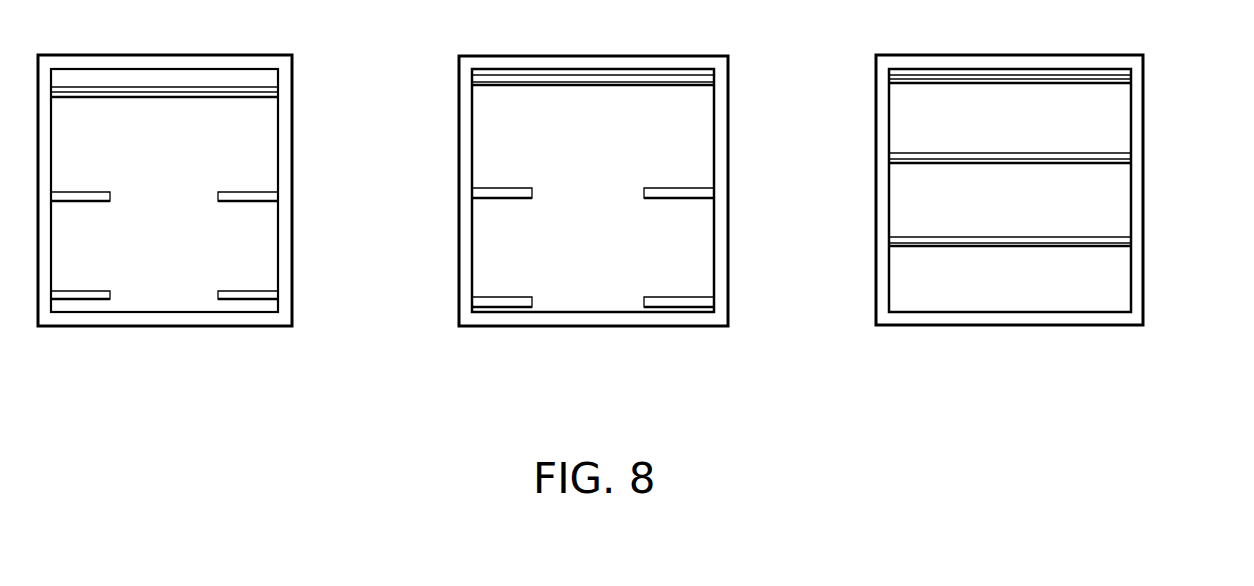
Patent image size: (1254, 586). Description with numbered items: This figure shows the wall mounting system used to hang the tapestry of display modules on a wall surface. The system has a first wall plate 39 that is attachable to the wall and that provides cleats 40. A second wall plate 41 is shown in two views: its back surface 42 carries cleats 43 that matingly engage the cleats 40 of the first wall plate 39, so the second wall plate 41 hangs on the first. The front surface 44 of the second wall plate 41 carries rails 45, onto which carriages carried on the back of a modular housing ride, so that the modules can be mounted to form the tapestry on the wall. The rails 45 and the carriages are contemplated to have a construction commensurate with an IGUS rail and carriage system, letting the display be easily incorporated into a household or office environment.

The first wall plate 39 is at (95, 318).
The cleats 40 is at (222, 295).
The second wall plate 41 is at (495, 318).
The back surface 42 is at (582, 278).
The cleats 43 is at (707, 302).
The front surface 44 is at (1090, 195).
The rails 45 is at (1095, 239).